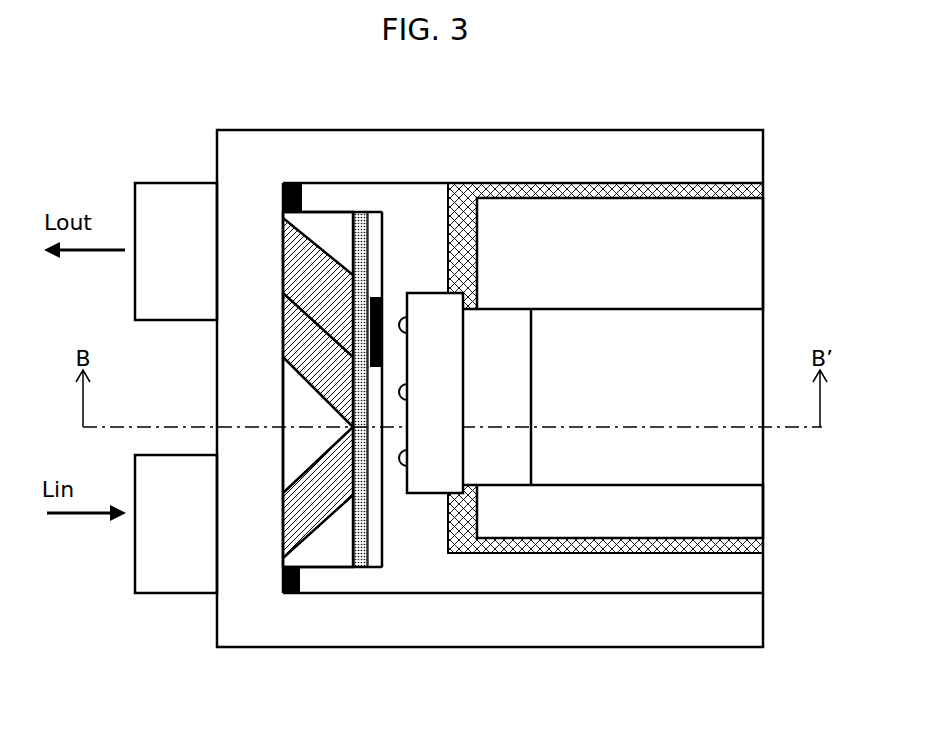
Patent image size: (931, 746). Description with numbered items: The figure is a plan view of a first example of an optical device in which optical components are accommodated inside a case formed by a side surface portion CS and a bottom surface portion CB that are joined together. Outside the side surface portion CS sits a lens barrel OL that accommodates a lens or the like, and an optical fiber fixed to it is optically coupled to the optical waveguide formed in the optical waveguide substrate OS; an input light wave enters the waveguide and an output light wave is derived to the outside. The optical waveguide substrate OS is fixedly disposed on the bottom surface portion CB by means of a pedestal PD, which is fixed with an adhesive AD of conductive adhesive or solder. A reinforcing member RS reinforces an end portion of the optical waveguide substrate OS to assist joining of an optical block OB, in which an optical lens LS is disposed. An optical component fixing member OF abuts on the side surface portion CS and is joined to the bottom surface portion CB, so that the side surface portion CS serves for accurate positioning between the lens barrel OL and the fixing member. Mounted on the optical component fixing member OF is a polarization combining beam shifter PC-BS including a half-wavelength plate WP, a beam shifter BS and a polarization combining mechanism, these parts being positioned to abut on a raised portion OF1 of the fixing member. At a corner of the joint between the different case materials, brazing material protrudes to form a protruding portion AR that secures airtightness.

The side surface portion of case CS is at (596, 627).
The bottom surface portion of case CB is at (520, 572).
The lens barrel OL is at (187, 227).
The beam shifter BS is at (325, 530).
The polarization combining beam shifter PC-BS is at (325, 250).
The optical component fixing member OF is at (330, 568).
The raised portion OF1 is at (357, 568).
The half-wavelength plate WP is at (381, 315).
The protruding portion AR is at (282, 580).
The adhesive AD is at (721, 560).
The optical waveguide substrate OS is at (705, 335).
The pedestal PD is at (688, 515).
The reinforcing member RS is at (507, 330).
The optical block OB is at (420, 317).
The optical lens LS is at (397, 467).